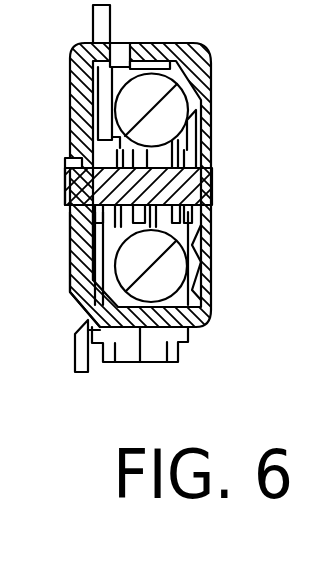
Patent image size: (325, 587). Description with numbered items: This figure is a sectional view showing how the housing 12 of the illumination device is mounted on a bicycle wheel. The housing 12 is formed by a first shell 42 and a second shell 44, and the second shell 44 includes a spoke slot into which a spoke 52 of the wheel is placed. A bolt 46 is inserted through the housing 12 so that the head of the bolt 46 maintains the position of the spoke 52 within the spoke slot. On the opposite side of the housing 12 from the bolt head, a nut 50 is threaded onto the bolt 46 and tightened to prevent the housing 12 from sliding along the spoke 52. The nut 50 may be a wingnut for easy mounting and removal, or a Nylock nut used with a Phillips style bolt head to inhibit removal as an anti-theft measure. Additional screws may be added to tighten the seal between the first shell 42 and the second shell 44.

The housing 12 is at (212, 101).
The first shell 42 is at (213, 298).
The second shell 44 is at (70, 268).
The bolt 46 is at (63, 187).
The nut 50 is at (213, 212).
The spoke 52 is at (72, 347).